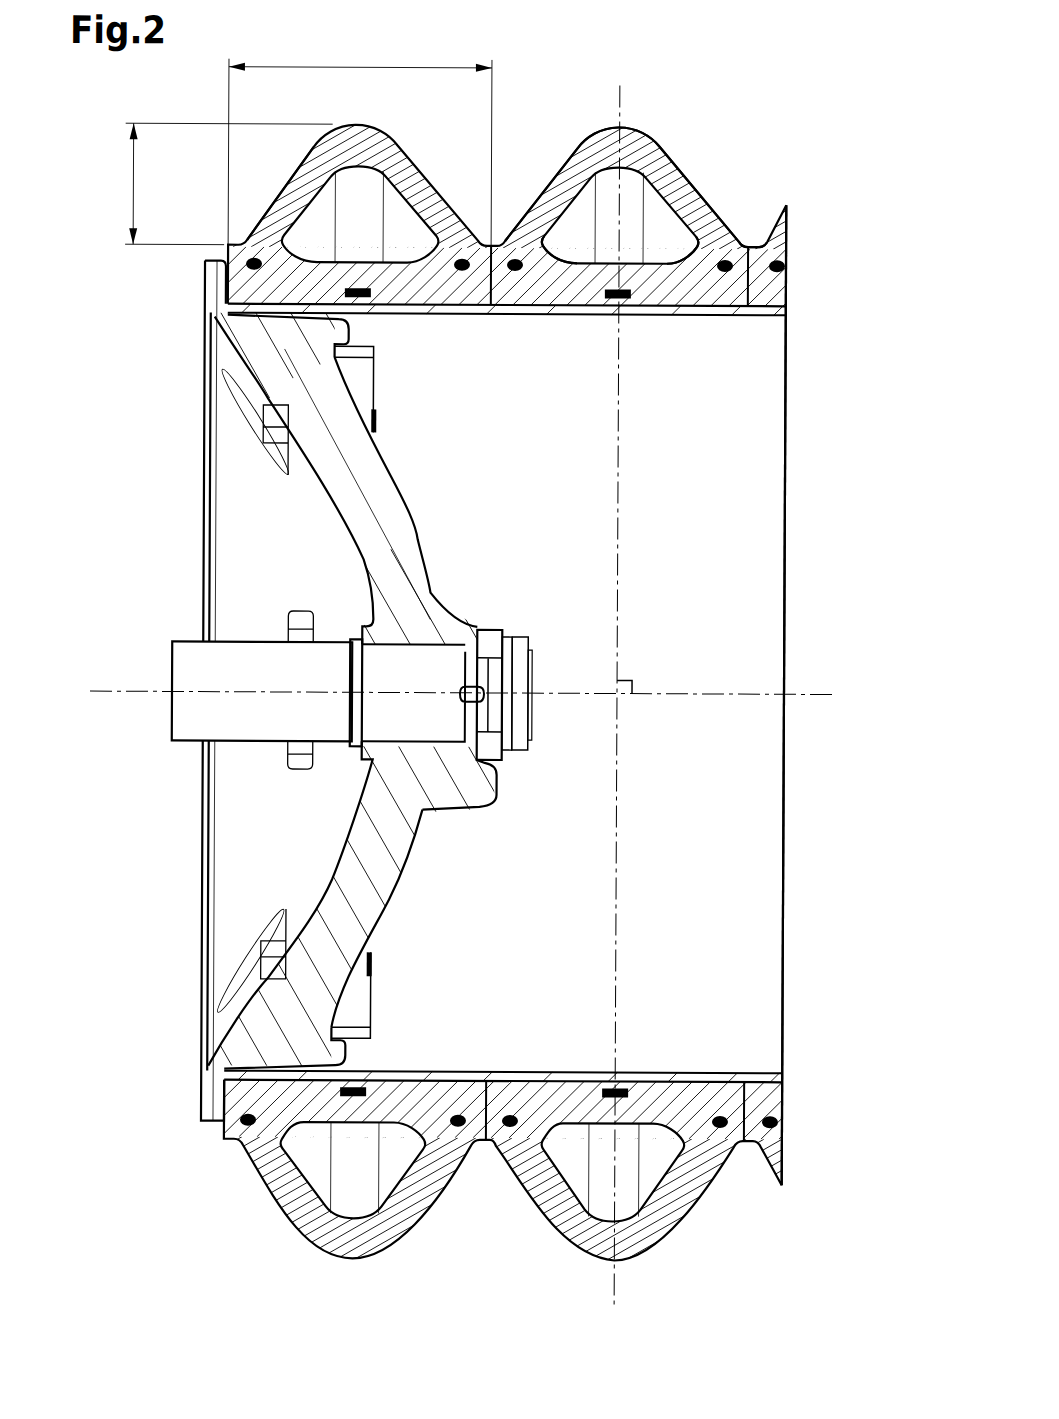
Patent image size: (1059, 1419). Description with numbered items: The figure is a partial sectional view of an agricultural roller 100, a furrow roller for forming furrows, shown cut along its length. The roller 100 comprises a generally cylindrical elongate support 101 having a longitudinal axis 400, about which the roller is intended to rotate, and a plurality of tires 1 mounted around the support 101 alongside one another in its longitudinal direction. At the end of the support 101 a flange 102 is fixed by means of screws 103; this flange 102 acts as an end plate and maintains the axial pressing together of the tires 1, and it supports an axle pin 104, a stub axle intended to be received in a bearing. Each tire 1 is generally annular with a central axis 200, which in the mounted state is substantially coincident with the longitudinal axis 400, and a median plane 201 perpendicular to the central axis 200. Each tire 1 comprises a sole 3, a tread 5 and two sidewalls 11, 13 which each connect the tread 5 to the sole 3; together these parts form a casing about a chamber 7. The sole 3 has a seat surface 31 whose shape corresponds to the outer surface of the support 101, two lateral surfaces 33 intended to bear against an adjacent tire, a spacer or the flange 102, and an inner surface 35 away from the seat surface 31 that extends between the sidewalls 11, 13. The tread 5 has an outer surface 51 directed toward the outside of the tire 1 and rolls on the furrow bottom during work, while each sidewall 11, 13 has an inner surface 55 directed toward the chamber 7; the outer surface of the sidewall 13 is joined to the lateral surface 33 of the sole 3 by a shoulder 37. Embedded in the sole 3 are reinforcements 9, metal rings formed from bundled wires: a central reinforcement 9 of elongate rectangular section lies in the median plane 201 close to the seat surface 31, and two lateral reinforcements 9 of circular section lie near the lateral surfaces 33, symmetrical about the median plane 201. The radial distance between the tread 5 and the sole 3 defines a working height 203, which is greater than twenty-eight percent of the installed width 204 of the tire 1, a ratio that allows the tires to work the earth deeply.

The tire 1 is at (563, 142).
The sole 3 is at (552, 286).
The tread 5 is at (697, 202).
The chamber 7 is at (634, 213).
The reinforcements 9 is at (356, 289).
The sidewall 11 is at (276, 175).
The sidewall 13 is at (432, 148).
The seat surface 31 is at (639, 310).
The lateral surfaces 33 is at (784, 291).
The inner surface 35 is at (585, 262).
The shoulder 37 is at (747, 247).
The outer surface 51 is at (619, 128).
The inner surface 55 is at (672, 220).
The agricultural roller 100 is at (693, 102).
The support 101 is at (681, 310).
The flange 102 is at (378, 498).
The screws 103 is at (258, 963).
The axle pin 104 is at (195, 715).
The central axis 200 is at (692, 693).
The median plane 201 is at (618, 905).
The working height 203 is at (131, 173).
The width 204 is at (348, 68).
The longitudinal axis 400 is at (675, 696).